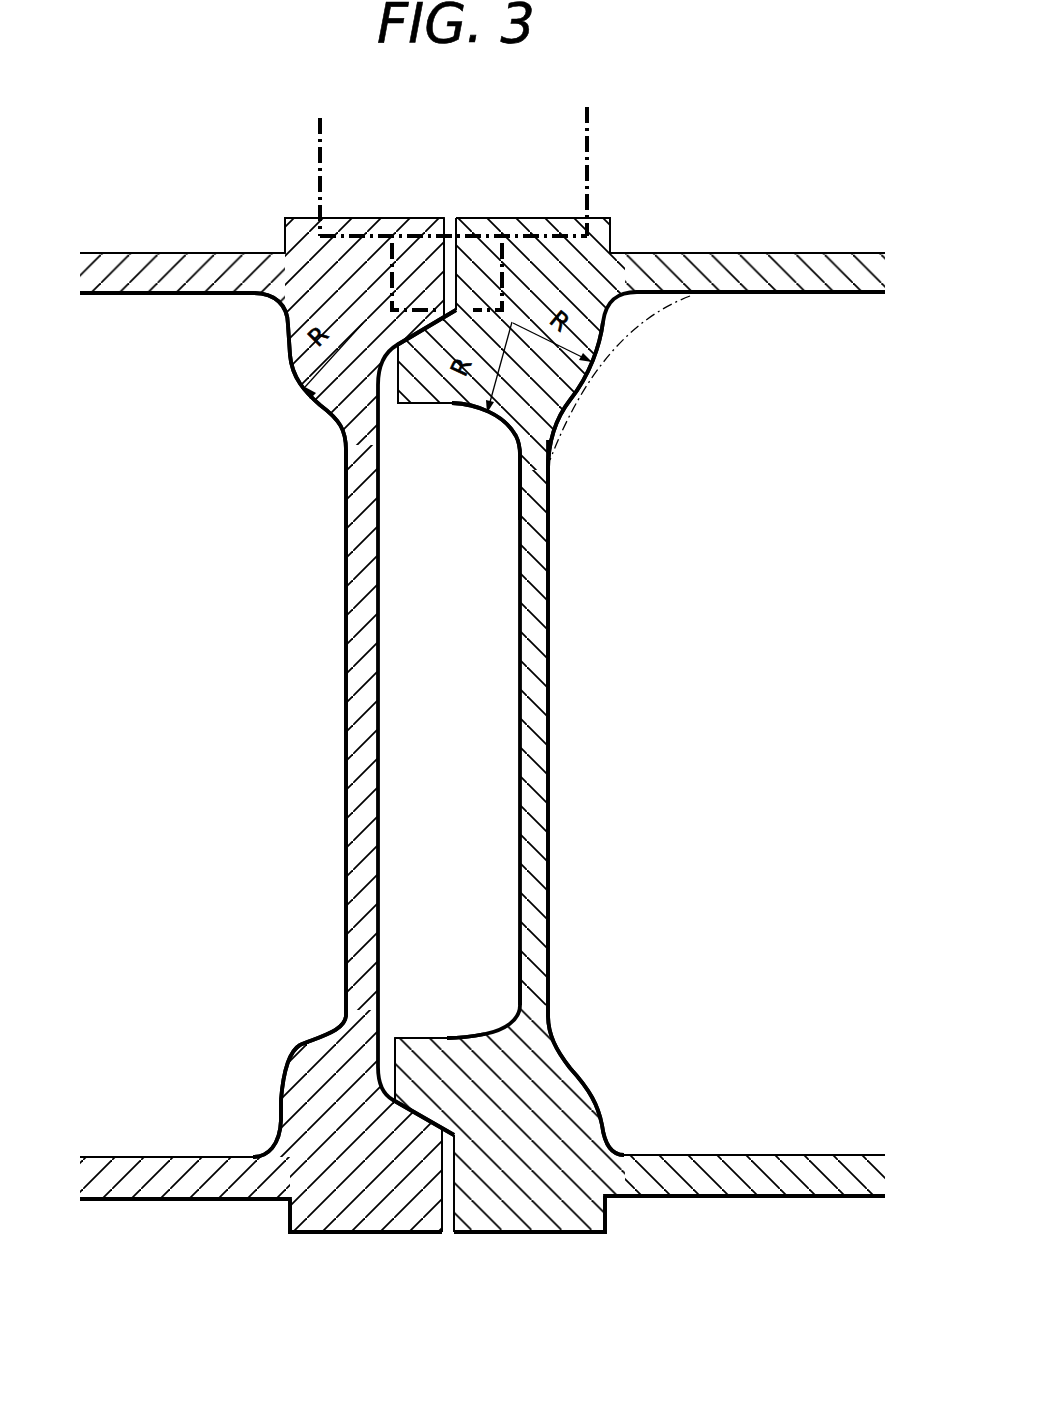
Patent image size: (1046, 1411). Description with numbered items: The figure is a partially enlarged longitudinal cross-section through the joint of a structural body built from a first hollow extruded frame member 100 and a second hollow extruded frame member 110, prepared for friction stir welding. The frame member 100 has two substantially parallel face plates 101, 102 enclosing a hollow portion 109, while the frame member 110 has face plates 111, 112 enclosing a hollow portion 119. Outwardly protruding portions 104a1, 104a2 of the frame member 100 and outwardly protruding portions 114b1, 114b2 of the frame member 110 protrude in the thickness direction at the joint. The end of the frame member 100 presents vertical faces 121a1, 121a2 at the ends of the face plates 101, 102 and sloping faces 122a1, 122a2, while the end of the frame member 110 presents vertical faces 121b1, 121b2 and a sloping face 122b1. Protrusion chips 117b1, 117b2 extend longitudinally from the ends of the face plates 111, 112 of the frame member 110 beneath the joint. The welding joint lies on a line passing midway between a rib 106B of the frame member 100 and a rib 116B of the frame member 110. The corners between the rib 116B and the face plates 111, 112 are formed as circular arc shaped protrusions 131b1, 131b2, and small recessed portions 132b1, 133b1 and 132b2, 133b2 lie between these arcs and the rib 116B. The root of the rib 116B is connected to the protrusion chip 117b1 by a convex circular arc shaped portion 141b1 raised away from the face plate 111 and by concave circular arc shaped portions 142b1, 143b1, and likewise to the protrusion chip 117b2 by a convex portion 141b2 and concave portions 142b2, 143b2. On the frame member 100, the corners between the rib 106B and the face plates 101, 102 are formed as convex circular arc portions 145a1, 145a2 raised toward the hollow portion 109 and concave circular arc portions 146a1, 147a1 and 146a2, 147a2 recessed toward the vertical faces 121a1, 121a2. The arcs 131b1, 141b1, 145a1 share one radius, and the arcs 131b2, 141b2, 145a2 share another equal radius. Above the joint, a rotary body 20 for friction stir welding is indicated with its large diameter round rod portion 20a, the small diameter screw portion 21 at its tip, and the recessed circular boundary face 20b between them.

The first hollow extruded frame member 100 is at (168, 157).
The second hollow extruded frame member 110 is at (738, 141).
The face plate 101 is at (143, 265).
The face plate 102 is at (140, 1182).
The face plate 111 is at (785, 262).
The face plate 112 is at (752, 1182).
The outwardly protruding portion 104a1 is at (300, 218).
The outwardly protruding portion 104a2 is at (330, 1225).
The outwardly protruding portion 114b1 is at (598, 217).
The outwardly protruding portion 114b2 is at (543, 1223).
The vertical face 121a1 is at (443, 240).
The vertical face 121a2 is at (438, 1213).
The vertical face 121b1 is at (458, 235).
The vertical face 121b2 is at (460, 1217).
The sloping face 122a1 is at (407, 335).
The sloping face 122a2 is at (407, 1113).
The sloping face 122b1 is at (585, 380).
The recessed portion 133b1 is at (636, 298).
The recessed portion 133b2 is at (552, 1020).
The circular arc shaped protrusion 131b1 is at (585, 397).
The circular arc shaped protrusion chip 131b2 is at (580, 1075).
The recessed portion 132b1 is at (555, 440).
The recessed portion 132b2 is at (618, 1140).
The concave circular arc portion 147a1 is at (273, 313).
The concave circular arc portion 147a2 is at (250, 1152).
The convex circular arc portion 145a1 is at (297, 390).
The convex circular arc portion 145a2 is at (298, 1050).
The concave circular arc portion 146a1 is at (340, 430).
The concave circular arc portion 146a2 is at (342, 1030).
The protrusion chip 117b1 is at (420, 387).
The protrusion chip 117b2 is at (433, 1062).
The concave circular arc shaped portion 143b1 is at (453, 408).
The concave circular arc shaped portion 143b2 is at (396, 1038).
The convex circular arc shaped portion 141b1 is at (492, 420).
The convex circular arc shaped portion 141b2 is at (452, 1036).
The concave circular arc shaped portion 142b1 is at (521, 452).
The concave circular arc shaped portion 142b2 is at (520, 990).
The hollow portion 109 is at (260, 543).
The hollow portion 119 is at (625, 553).
The rib 106B is at (352, 692).
The rib 116B is at (540, 640).
The rotary body 20 is at (674, 84).
The large diameter round rod portion 20a is at (592, 150).
The boundary face 20b is at (510, 232).
The small diameter portion 21 is at (560, 268).